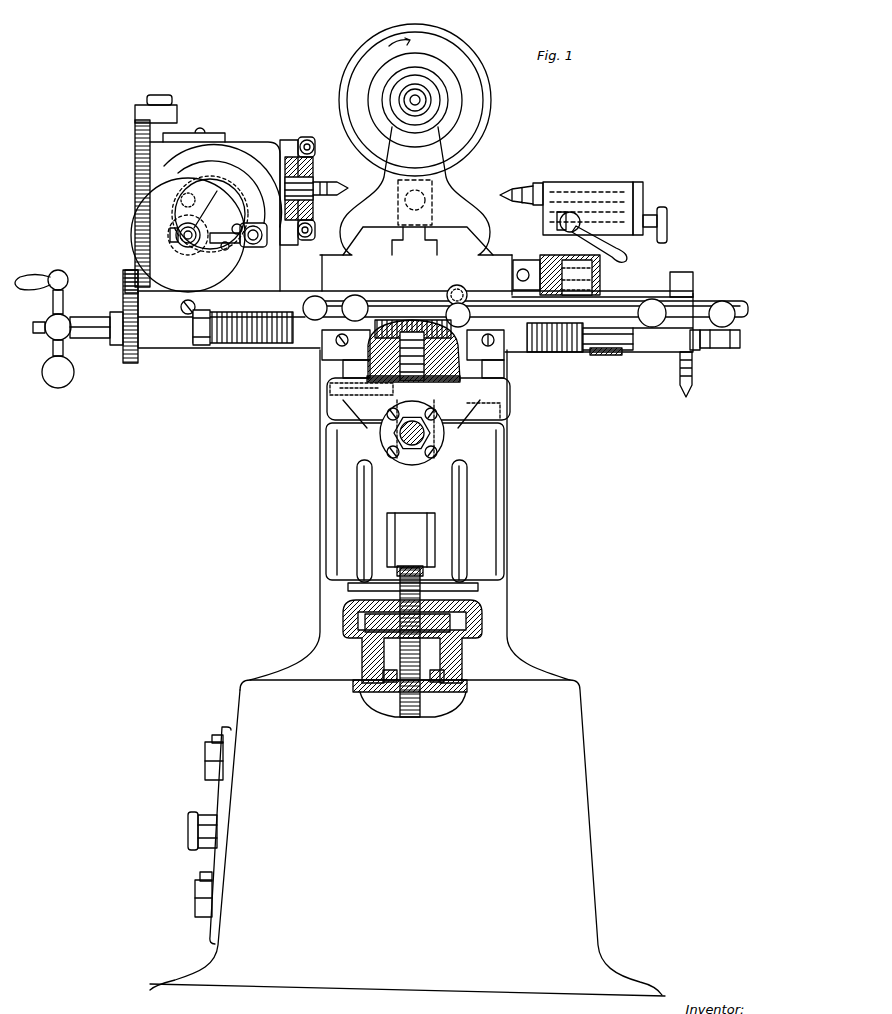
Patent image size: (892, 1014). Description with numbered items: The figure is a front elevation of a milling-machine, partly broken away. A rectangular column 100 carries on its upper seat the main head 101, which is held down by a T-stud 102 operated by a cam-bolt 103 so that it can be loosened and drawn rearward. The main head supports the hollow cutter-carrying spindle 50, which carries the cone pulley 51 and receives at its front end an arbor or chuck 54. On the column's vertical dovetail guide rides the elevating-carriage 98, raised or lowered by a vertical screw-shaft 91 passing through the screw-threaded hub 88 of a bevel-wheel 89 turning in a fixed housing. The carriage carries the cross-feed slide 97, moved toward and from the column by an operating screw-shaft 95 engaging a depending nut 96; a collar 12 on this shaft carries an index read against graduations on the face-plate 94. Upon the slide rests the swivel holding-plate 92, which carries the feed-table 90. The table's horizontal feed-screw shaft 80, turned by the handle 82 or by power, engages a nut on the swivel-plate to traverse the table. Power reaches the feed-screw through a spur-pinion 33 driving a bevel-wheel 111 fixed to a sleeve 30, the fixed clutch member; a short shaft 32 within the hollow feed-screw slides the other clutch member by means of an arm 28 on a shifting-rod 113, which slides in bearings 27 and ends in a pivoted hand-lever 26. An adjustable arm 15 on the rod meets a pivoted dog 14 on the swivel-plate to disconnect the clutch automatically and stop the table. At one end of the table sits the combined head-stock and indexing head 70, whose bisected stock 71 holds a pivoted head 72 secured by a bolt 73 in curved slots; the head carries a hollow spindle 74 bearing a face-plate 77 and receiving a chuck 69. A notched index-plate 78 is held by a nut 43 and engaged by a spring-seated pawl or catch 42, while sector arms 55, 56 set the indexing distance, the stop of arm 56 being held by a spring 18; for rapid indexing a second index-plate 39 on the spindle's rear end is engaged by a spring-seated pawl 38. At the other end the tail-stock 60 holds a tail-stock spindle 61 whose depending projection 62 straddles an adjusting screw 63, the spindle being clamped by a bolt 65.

The collar 12 is at (408, 468).
The pivoted dog 14 is at (460, 360).
The adjustable arm 15 is at (470, 304).
The spring 18 is at (222, 258).
The pivoted hand-lever 26 is at (315, 308).
The bearings 27 is at (504, 311).
The arm 28 is at (718, 350).
The sleeve 30 is at (413, 300).
The short shaft 32 is at (742, 342).
The spur-pinion 33 is at (368, 370).
The spring-seated pawl 38 is at (135, 112).
The index-plate 39 is at (135, 165).
The pawl or catch 42 is at (186, 192).
The nut 43 is at (176, 236).
The spindle 50 is at (433, 88).
The cone pulley 51 is at (484, 84).
The arbor or chuck 54 is at (417, 112).
The sector arm 55 is at (210, 214).
The sector arm 56 is at (228, 243).
The tail-stock 60 is at (626, 276).
The tail-stock spindle 61 is at (536, 182).
The depending projection 62 is at (643, 200).
The adjusting screw 63 is at (667, 222).
The bolt 65 is at (570, 230).
The chuck 69 is at (320, 178).
The head-stock 70 is at (215, 207).
The stock 71 is at (238, 178).
The pivoted head 72 is at (225, 186).
The bolt 73 is at (253, 246).
The hollow spindle 74 is at (295, 137).
The face-plate 77 is at (314, 147).
The index-plate 78 is at (188, 235).
The feed-screw shaft 80 is at (244, 346).
The handle 82 is at (66, 300).
The screw-threaded hub 88 is at (396, 640).
The bevel-wheel 89 is at (476, 620).
The feed-table 90 is at (415, 321).
The screw-shaft 91 is at (420, 593).
The swivel holding-plate 92 is at (413, 345).
The face-plate 94 is at (388, 416).
The operating screw-shaft 95 is at (424, 440).
The screw-threaded nut 96 is at (393, 446).
The cross-feed slide 97 is at (418, 403).
The elevating-carriage 98 is at (415, 507).
The column 100 is at (497, 612).
The main head 101 is at (416, 211).
The T-stud 102 is at (432, 222).
The cam-bolt 103 is at (425, 200).
The bevel-wheel 111 is at (680, 378).
The shifting-rod 113 is at (523, 314).